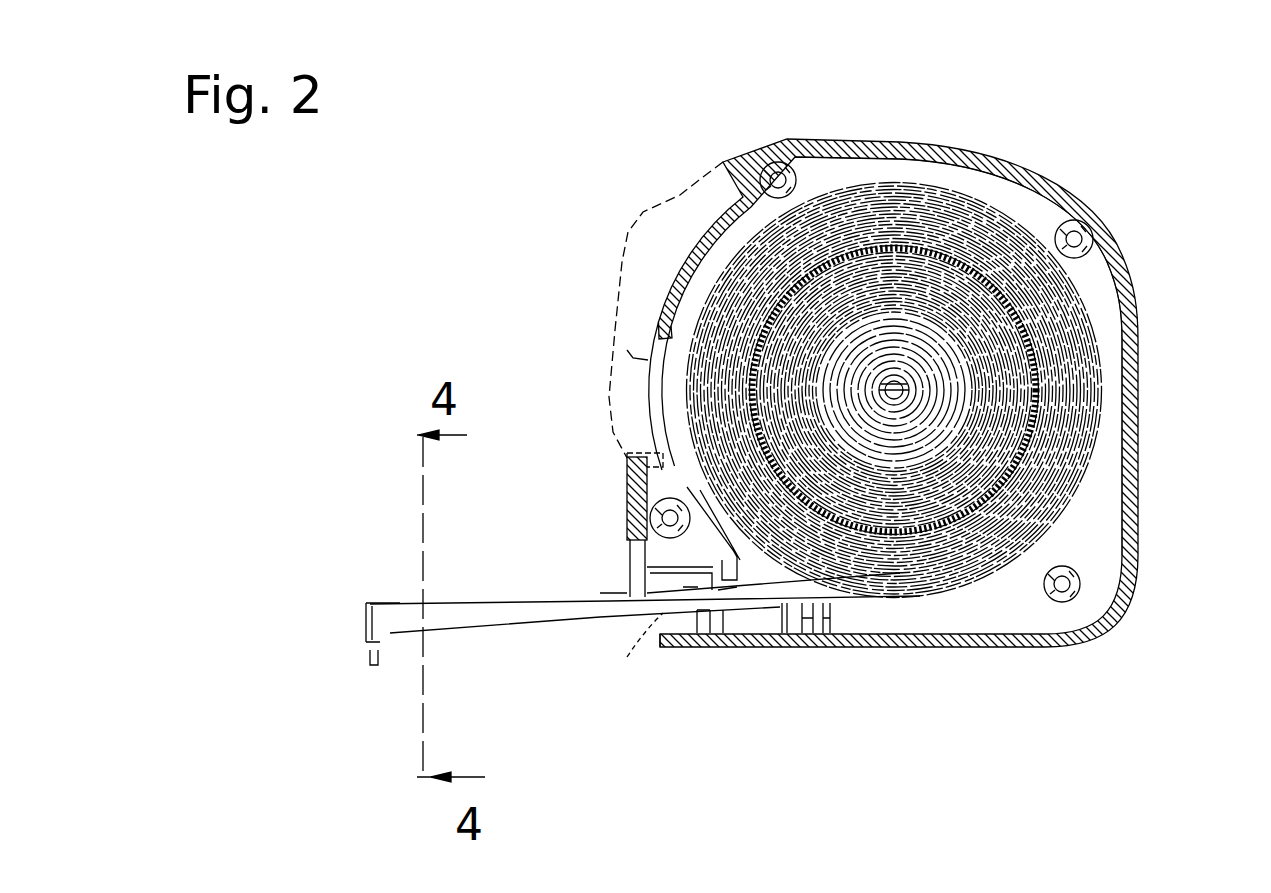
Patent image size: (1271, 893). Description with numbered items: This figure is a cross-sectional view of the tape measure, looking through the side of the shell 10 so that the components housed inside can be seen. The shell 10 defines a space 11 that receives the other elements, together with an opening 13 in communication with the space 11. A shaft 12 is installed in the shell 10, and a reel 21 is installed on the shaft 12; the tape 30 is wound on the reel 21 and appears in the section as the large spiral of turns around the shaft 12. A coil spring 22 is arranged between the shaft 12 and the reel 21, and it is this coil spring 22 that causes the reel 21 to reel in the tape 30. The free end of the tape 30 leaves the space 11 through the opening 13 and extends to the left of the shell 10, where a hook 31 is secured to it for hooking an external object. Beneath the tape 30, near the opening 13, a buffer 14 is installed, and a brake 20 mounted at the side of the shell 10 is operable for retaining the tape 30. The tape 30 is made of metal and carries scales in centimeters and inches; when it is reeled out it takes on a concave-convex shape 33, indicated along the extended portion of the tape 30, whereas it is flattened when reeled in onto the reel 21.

The shell 10 is at (943, 150).
The space 11 is at (1032, 203).
The shaft 12 is at (925, 390).
The opening 13 is at (622, 575).
The buffer 14 is at (660, 618).
The brake 20 is at (697, 205).
The reel 21 is at (1010, 311).
The coil spring 22 is at (980, 440).
The tape 30 is at (720, 358).
The hook 31 is at (366, 644).
The concave-convex shape 33 is at (455, 600).